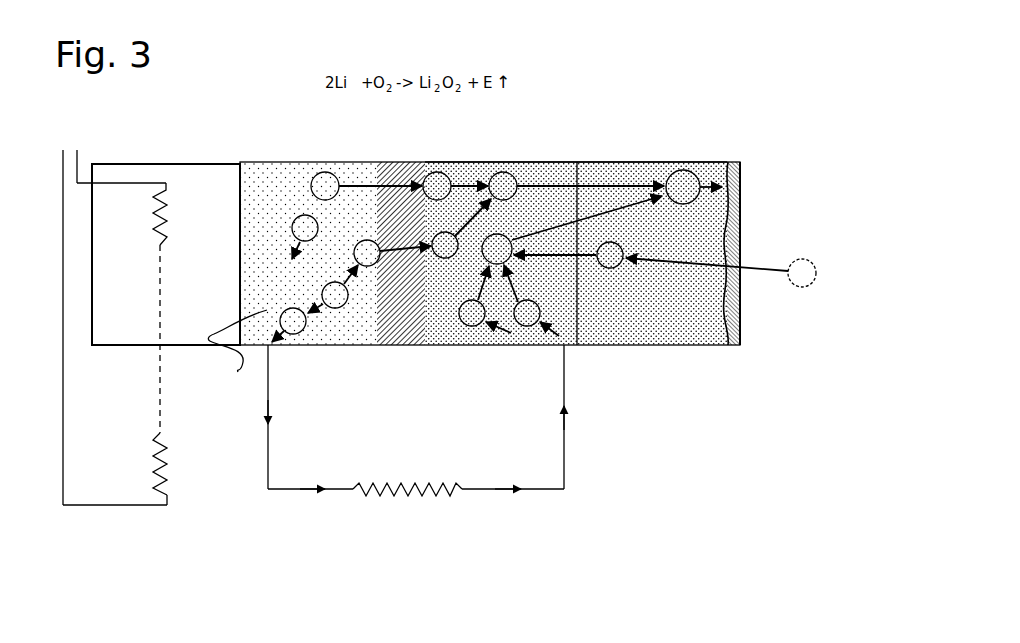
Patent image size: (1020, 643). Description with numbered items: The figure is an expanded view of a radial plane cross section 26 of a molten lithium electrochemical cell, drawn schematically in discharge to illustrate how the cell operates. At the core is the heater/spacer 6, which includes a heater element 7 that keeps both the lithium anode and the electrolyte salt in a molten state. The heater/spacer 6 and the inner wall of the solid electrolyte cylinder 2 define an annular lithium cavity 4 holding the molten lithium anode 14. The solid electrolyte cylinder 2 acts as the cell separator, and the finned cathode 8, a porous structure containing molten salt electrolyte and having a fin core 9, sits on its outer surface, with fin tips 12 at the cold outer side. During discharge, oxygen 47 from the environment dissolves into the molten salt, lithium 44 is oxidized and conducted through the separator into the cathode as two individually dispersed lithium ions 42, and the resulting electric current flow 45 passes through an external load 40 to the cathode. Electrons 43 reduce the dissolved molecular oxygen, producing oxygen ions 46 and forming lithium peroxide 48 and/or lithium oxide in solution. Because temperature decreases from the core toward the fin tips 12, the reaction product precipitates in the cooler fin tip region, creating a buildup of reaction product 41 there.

The radial plane cross section 26 is at (258, 104).
The heater/spacer 6 is at (176, 162).
The heater element 7 is at (156, 217).
The annular lithium cavity 4 is at (262, 162).
The solid electrolyte cylinder 2 is at (388, 162).
The finned cathode 8 is at (622, 178).
The core of the fin 9 is at (520, 164).
The buildup of reaction product 41 is at (742, 162).
The fin tips 12 is at (742, 228).
The lithium 44 is at (327, 172).
The lithium ions 42 is at (500, 172).
The oxygen ions 46 is at (506, 238).
The electrons 43 is at (480, 323).
The oxygen 47 is at (810, 286).
The lithium peroxide 48 is at (690, 170).
The electric current flow 45 is at (430, 346).
The molten lithium anode 14 is at (237, 352).
The load 40 is at (381, 497).